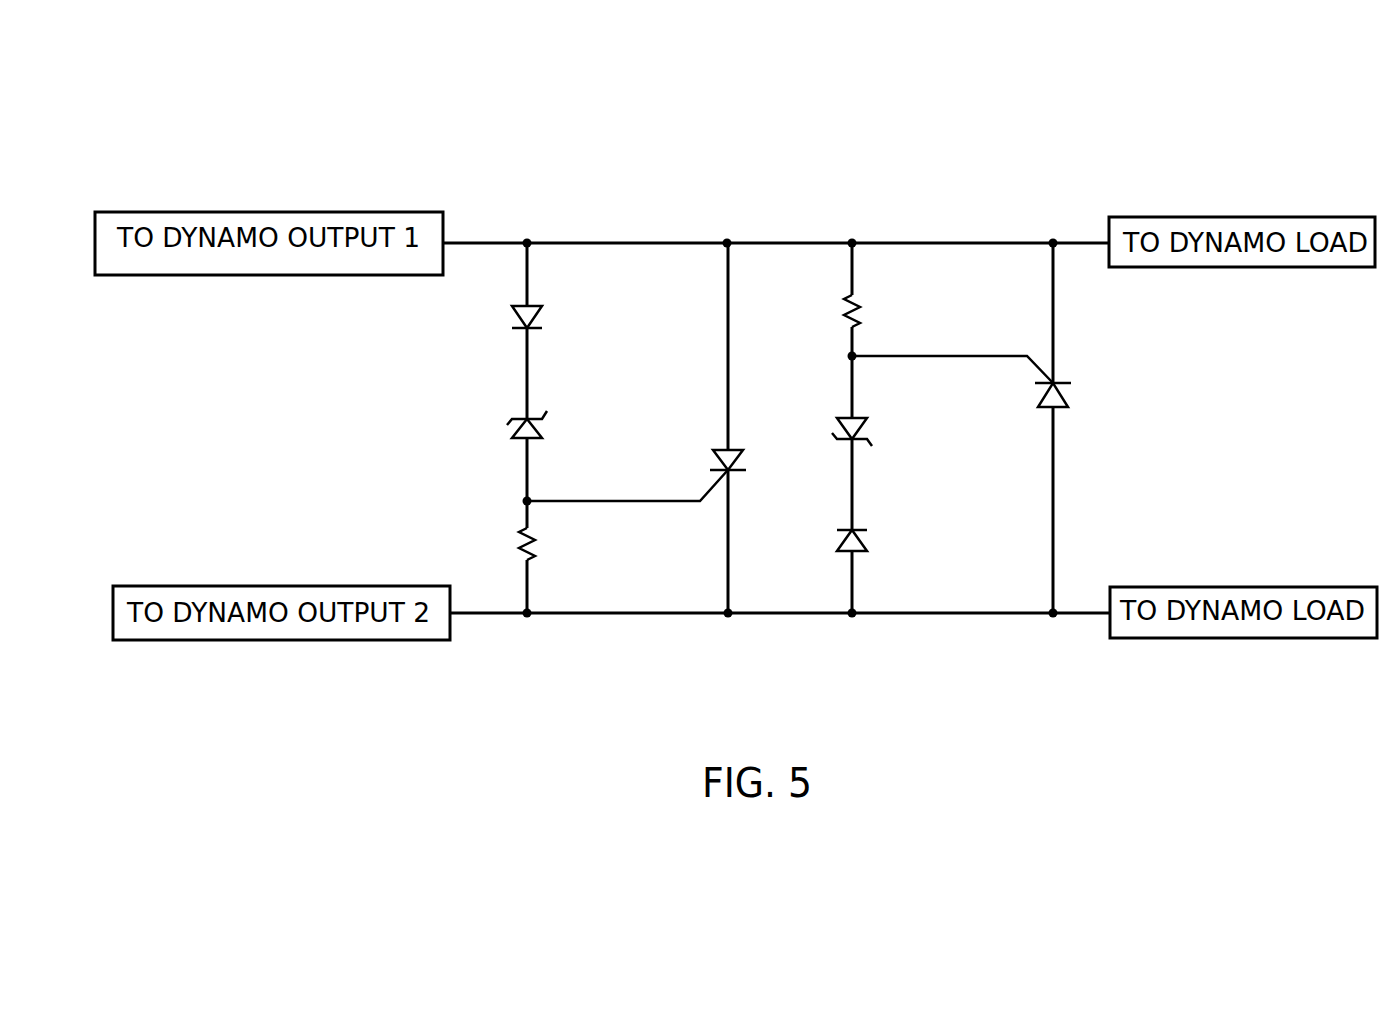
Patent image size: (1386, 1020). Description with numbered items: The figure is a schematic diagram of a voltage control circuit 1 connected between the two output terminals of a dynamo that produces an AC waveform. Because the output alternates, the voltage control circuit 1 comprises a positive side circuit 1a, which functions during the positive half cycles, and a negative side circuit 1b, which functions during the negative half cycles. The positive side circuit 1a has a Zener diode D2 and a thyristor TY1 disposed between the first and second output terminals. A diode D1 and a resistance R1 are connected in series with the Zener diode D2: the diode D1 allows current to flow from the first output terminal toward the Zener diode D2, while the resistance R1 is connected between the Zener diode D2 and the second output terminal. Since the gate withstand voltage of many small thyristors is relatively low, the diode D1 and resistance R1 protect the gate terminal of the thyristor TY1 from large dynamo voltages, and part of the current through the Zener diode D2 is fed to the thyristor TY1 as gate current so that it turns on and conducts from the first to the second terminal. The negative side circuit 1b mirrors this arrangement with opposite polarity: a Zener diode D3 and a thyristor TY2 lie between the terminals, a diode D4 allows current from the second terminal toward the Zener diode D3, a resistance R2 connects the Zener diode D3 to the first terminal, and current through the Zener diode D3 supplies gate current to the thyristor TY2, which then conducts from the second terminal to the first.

The voltage control circuit 1 is at (827, 143).
The positive side circuit 1a is at (658, 232).
The negative side circuit 1b is at (925, 232).
The diode D1 is at (555, 314).
The Zener diode D2 is at (556, 416).
The Zener diode D3 is at (882, 423).
The diode D4 is at (883, 534).
The resistance R1 is at (496, 544).
The resistance R2 is at (881, 307).
The thyristor TY1 is at (636, 499).
The thyristor TY2 is at (996, 378).